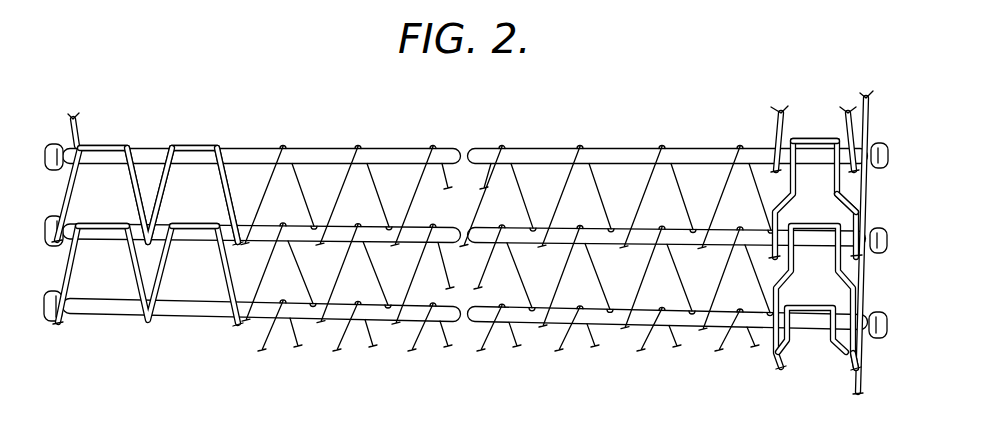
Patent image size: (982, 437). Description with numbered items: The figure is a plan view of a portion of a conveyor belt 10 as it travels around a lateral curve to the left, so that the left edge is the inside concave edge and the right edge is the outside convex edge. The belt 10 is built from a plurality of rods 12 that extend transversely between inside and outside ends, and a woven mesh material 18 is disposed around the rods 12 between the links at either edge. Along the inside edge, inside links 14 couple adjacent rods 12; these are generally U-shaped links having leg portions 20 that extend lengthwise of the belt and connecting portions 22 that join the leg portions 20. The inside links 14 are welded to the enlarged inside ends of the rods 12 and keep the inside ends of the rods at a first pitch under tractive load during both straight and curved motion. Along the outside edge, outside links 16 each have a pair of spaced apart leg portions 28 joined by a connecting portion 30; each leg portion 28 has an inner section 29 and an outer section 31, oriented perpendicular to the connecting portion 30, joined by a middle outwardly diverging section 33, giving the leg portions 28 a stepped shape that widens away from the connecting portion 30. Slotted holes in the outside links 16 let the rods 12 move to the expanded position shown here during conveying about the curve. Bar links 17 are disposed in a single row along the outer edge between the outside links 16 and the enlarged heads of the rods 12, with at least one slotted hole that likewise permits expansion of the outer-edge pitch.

The conveyor belt 10 is at (194, 86).
The rods 12 is at (558, 153).
The inside links 14 is at (178, 140).
The outside links 16 is at (780, 191).
The bar links 17 is at (873, 107).
The woven mesh material 18 is at (415, 195).
The leg portions 20 is at (222, 199).
The connecting portions 22 is at (198, 146).
The leg portions 28 is at (834, 188).
The inner section 29 is at (828, 343).
The connecting portion 30 is at (812, 136).
The outer section 31 is at (867, 298).
The middle outwardly diverging section 33 is at (838, 369).